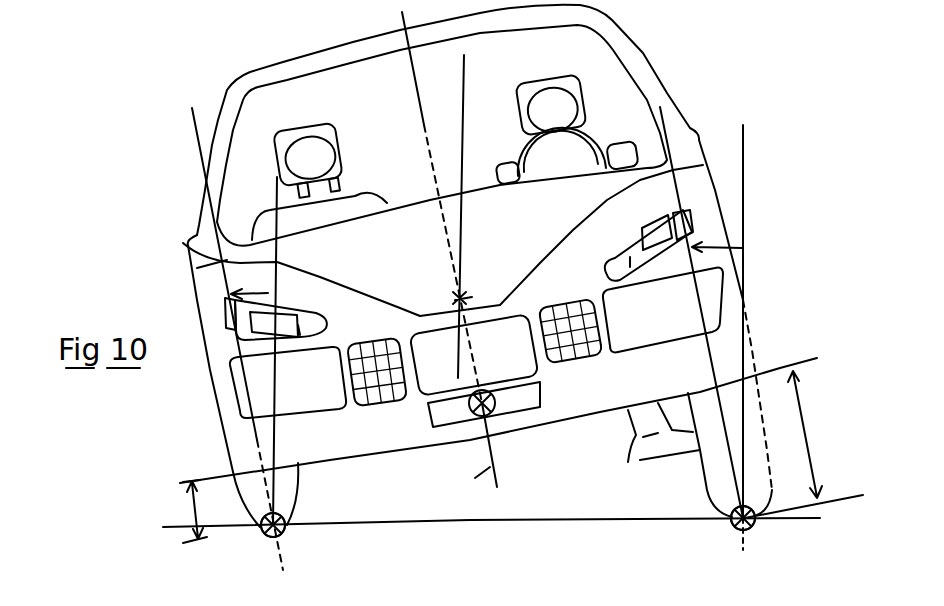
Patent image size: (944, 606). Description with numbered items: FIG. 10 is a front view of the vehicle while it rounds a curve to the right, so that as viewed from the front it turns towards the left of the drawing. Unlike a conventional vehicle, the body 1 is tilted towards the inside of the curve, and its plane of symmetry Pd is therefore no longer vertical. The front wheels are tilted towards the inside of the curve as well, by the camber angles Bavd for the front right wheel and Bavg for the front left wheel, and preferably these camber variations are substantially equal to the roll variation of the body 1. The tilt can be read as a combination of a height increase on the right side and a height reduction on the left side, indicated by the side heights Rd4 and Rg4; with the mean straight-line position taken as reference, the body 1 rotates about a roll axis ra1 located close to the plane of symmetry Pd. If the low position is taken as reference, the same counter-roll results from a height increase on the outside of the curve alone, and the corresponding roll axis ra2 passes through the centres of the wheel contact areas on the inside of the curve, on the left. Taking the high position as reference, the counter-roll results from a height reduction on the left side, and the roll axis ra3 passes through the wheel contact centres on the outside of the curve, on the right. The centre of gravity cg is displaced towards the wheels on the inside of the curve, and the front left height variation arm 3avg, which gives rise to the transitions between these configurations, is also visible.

The body 1 is at (647, 78).
The centre of gravity cg is at (477, 283).
The front left camber angle Bavd is at (236, 292).
The front right camber angle Bavg is at (715, 243).
The right side ride height Rd4 is at (187, 512).
The left side ride height Rg4 is at (829, 434).
The roll axis ra1 is at (495, 403).
The roll axis ra2 is at (286, 530).
The roll axis ra3 is at (733, 523).
The point Pd is at (463, 485).
The front left height variation arm 3avg is at (661, 455).